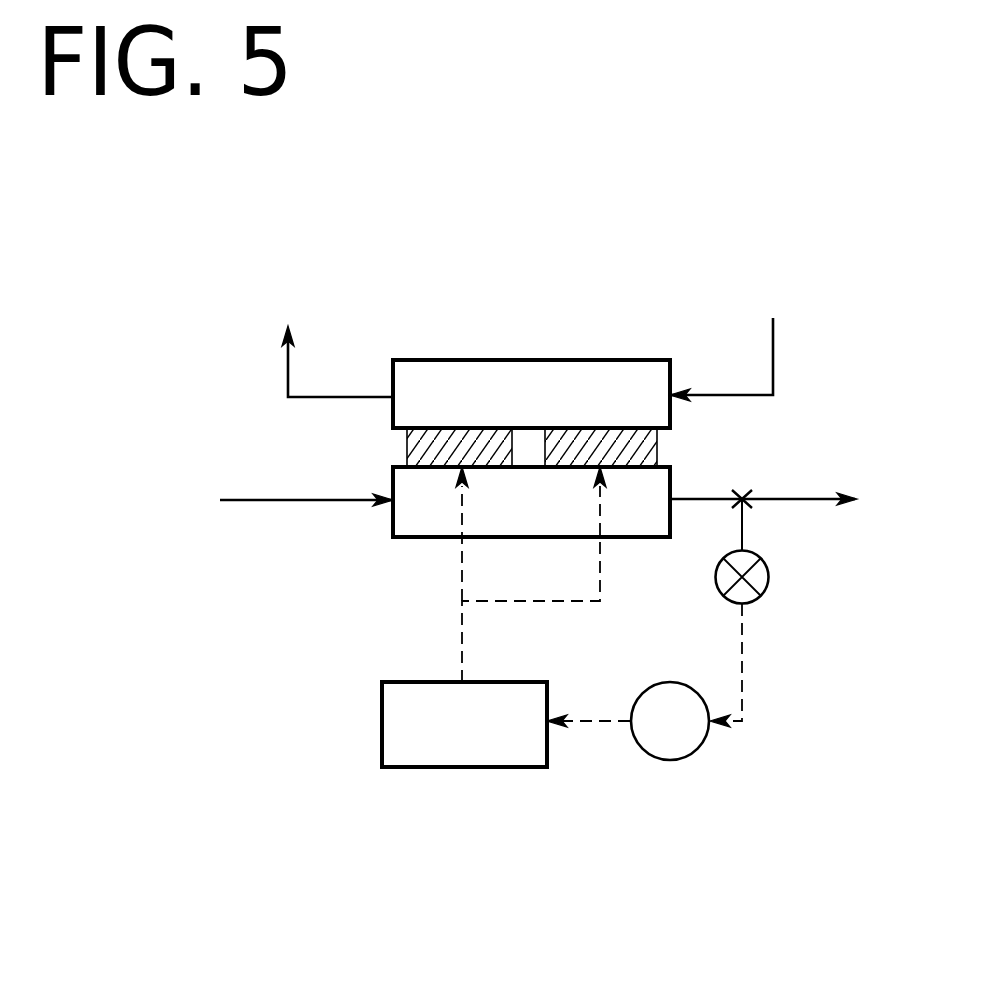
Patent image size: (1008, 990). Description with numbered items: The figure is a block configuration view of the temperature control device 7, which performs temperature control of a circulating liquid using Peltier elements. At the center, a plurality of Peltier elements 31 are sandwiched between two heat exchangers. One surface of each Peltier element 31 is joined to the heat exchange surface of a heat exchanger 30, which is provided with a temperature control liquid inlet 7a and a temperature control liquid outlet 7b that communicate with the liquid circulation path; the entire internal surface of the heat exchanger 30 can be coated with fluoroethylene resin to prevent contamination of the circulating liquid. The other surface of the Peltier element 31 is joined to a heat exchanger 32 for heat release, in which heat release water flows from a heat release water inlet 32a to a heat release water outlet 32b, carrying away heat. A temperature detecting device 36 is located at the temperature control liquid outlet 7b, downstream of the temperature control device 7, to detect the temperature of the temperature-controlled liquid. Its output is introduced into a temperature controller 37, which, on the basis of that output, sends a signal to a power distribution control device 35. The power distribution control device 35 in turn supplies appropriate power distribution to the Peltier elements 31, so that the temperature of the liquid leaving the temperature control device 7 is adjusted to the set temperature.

The temperature control device 7 is at (528, 389).
The temperature control liquid inlet 7a is at (228, 501).
The temperature control liquid outlet 7b is at (840, 505).
The heat exchanger 30 is at (417, 526).
The Peltier element 31 is at (593, 443).
The heat exchanger for heat release 32 is at (448, 372).
The heat release water inlet 32a is at (777, 325).
The heat release water outlet 32b is at (288, 340).
The power distribution control device 35 is at (398, 725).
The temperature detecting device 36 is at (758, 583).
The temperature controller 37 is at (703, 742).